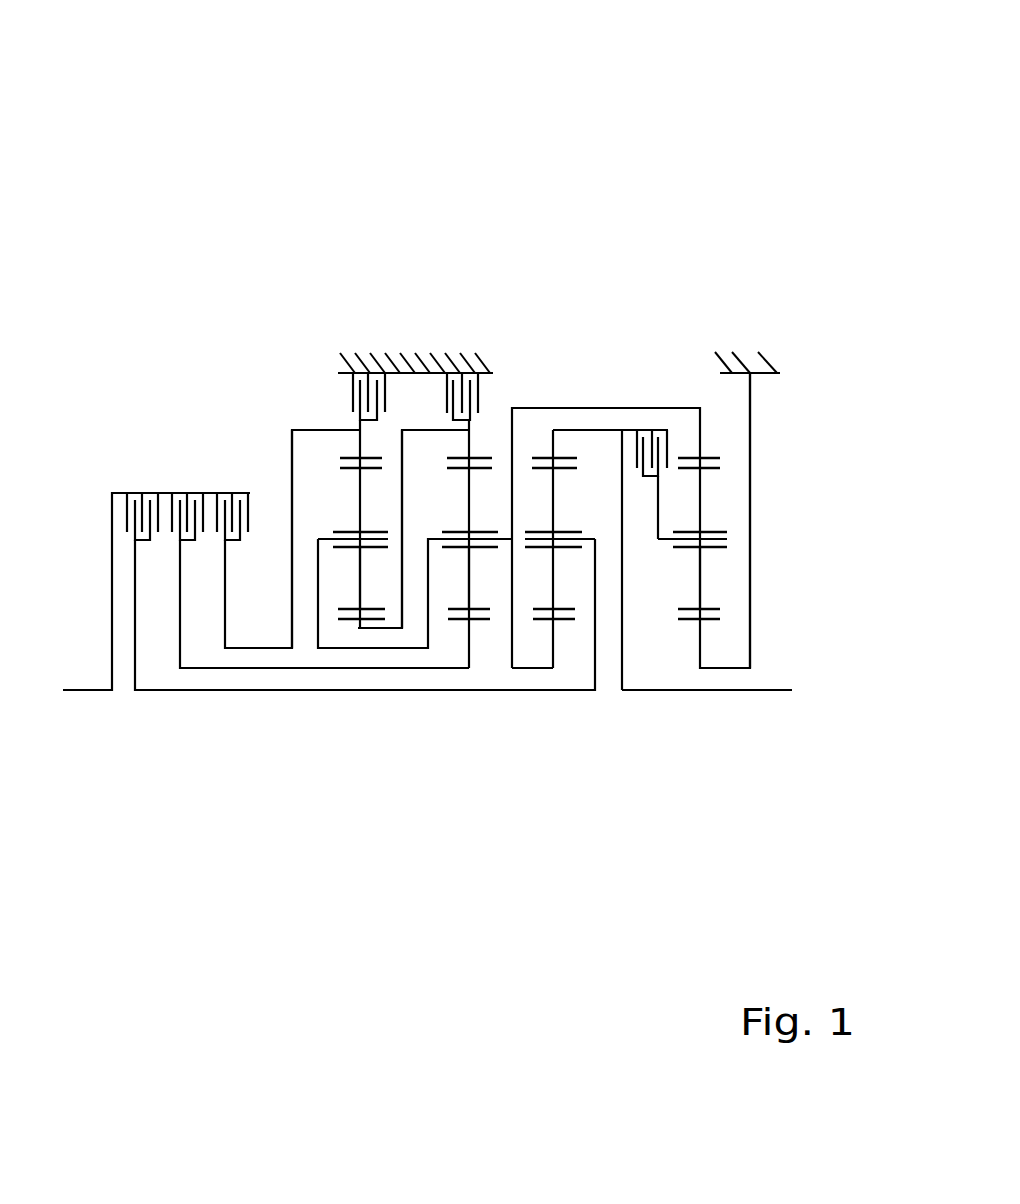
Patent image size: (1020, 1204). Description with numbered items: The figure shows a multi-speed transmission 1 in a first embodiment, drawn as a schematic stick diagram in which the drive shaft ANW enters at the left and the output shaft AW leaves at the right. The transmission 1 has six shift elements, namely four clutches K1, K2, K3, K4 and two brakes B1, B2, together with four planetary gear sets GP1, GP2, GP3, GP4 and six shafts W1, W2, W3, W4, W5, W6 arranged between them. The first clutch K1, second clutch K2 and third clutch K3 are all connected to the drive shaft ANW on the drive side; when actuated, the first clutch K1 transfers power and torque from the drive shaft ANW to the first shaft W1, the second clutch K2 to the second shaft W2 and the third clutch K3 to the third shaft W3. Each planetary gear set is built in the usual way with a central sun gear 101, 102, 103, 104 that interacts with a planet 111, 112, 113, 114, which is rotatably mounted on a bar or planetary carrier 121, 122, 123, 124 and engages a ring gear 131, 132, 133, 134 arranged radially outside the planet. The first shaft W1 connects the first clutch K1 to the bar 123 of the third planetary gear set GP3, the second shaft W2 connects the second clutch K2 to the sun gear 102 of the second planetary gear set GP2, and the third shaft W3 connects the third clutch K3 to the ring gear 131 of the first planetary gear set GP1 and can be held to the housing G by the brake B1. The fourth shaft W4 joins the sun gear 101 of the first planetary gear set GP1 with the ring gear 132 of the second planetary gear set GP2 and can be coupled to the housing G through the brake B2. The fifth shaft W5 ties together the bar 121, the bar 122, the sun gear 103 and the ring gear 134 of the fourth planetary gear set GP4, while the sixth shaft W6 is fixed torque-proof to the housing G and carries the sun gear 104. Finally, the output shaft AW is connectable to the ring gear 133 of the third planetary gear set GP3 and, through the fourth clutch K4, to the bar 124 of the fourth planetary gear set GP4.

The multi-speed transmission 1 is at (162, 82).
The first clutch K1 is at (108, 341).
The second clutch K2 is at (156, 341).
The third clutch K3 is at (206, 341).
The fourth clutch K4 is at (651, 340).
The brake B1 is at (351, 385).
The brake B2 is at (446, 405).
The housing G is at (559, 257).
The first planetary gear set GP1 is at (360, 710).
The second planetary gear set GP2 is at (469, 710).
The third planetary gear set GP3 is at (553, 710).
The fourth planetary gear set GP4 is at (698, 710).
The sun gear 101 is at (351, 761).
The sun gear 102 is at (456, 761).
The sun gear 103 is at (574, 761).
The sun gear 104 is at (723, 761).
The planet 111 is at (312, 730).
The planet 112 is at (488, 730).
The planet 113 is at (597, 702).
The planet 114 is at (771, 375).
The bar 121 is at (314, 313).
The bar 122 is at (488, 313).
The bar 123 is at (570, 344).
The bar 124 is at (679, 723).
The ring gear 131 is at (323, 305).
The ring gear 132 is at (478, 305).
The ring gear 133 is at (560, 274).
The ring gear 134 is at (699, 305).
The drive shaft ANW is at (102, 802).
The output shaft AW is at (718, 802).
The first shaft W1 is at (365, 802).
The second shaft W2 is at (324, 791).
The third shaft W3 is at (253, 395).
The fourth shaft W4 is at (411, 702).
The fifth shaft W5 is at (529, 497).
The sixth shaft W6 is at (775, 374).